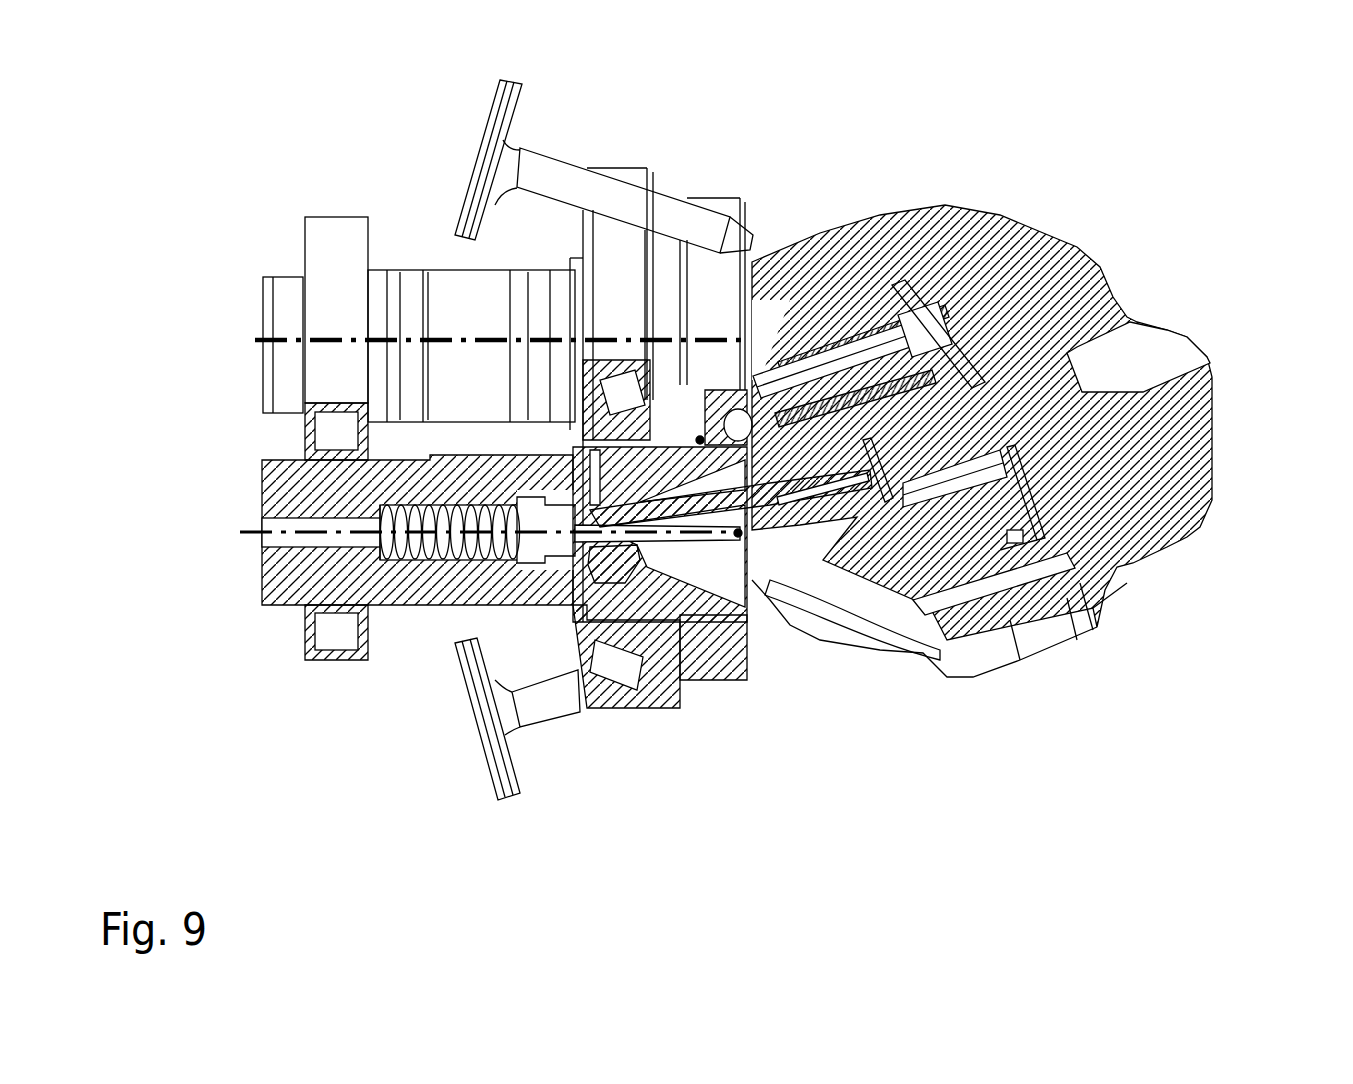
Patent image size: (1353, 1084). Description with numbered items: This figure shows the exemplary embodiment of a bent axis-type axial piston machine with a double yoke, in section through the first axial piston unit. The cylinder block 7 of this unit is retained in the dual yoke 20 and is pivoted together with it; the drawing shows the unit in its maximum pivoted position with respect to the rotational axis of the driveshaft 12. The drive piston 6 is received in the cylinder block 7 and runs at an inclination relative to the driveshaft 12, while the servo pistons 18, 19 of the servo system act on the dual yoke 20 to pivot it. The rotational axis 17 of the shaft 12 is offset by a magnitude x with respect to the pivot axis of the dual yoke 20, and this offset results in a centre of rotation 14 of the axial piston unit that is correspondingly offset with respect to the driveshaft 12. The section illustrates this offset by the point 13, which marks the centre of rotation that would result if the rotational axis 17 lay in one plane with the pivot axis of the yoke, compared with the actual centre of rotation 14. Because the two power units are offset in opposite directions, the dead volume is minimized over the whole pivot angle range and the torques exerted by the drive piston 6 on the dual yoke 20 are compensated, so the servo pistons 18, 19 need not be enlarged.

The drive piston 6 is at (860, 362).
The cylinder block 7 is at (973, 552).
The driveshaft 12 is at (283, 480).
The centre of rotation point 13 is at (738, 533).
The centre of rotation 14 is at (700, 440).
The rotational axis 17 is at (360, 530).
The servo piston 18 is at (520, 93).
The servo piston 19 is at (515, 780).
The dual yoke 20 is at (1190, 505).